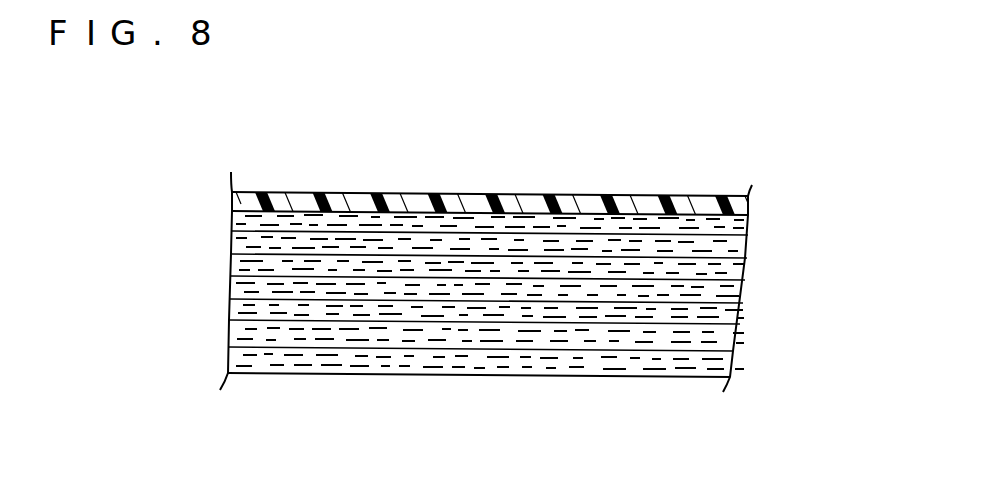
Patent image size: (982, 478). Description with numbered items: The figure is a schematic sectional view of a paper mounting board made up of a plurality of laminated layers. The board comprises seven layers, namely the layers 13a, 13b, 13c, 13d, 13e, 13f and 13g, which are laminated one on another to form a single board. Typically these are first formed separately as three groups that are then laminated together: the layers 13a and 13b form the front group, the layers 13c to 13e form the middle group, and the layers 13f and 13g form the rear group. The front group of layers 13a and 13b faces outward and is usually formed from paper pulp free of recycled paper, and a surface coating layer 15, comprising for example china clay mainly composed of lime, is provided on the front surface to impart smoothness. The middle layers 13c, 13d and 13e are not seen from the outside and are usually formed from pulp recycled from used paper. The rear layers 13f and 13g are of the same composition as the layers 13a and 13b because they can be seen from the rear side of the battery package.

The surface coating layer 15 is at (490, 161).
The layer 13a is at (540, 200).
The layer 13b is at (542, 261).
The layer 13c is at (440, 243).
The layer 13d is at (439, 287).
The layer 13e is at (442, 337).
The layer 13f is at (535, 342).
The layer 13g is at (532, 386).